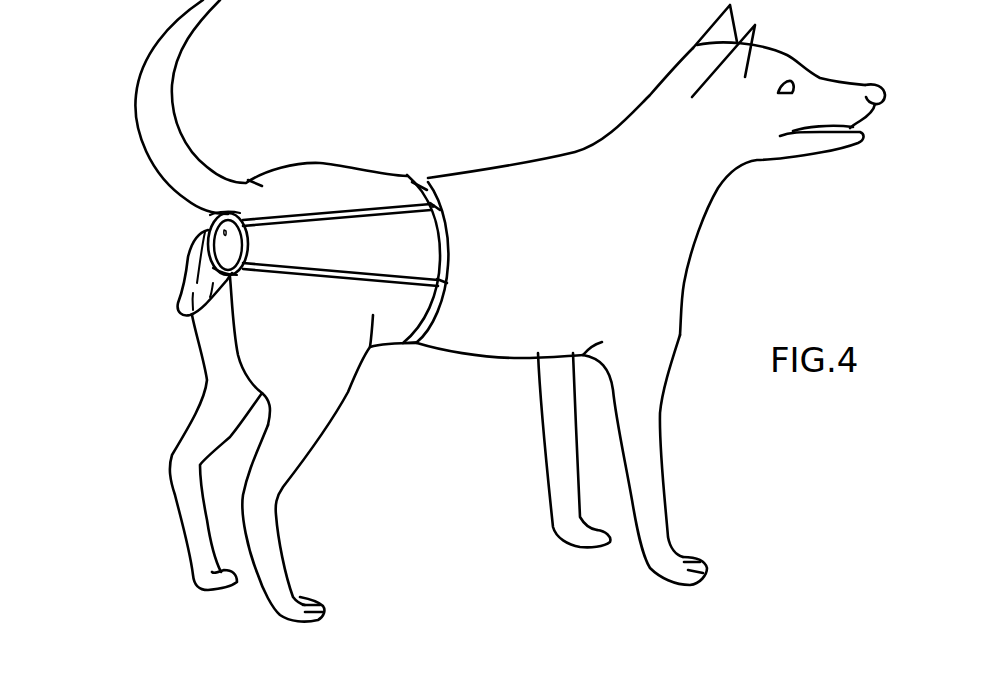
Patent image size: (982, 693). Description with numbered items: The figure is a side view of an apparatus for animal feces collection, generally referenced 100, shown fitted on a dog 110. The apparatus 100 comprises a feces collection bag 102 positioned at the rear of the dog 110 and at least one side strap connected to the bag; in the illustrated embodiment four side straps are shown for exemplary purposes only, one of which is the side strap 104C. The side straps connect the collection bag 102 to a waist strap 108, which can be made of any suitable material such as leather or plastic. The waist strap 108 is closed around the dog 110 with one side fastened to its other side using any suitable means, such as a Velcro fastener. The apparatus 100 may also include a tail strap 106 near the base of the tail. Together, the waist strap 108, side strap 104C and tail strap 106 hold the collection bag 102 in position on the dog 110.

The apparatus for animal's feces collection 100 is at (152, 247).
The feces collection bag 102 is at (178, 277).
The side strap 104C is at (390, 282).
The tail strap 106 is at (248, 184).
The waist strap 108 is at (440, 253).
The dog 110 is at (510, 311).